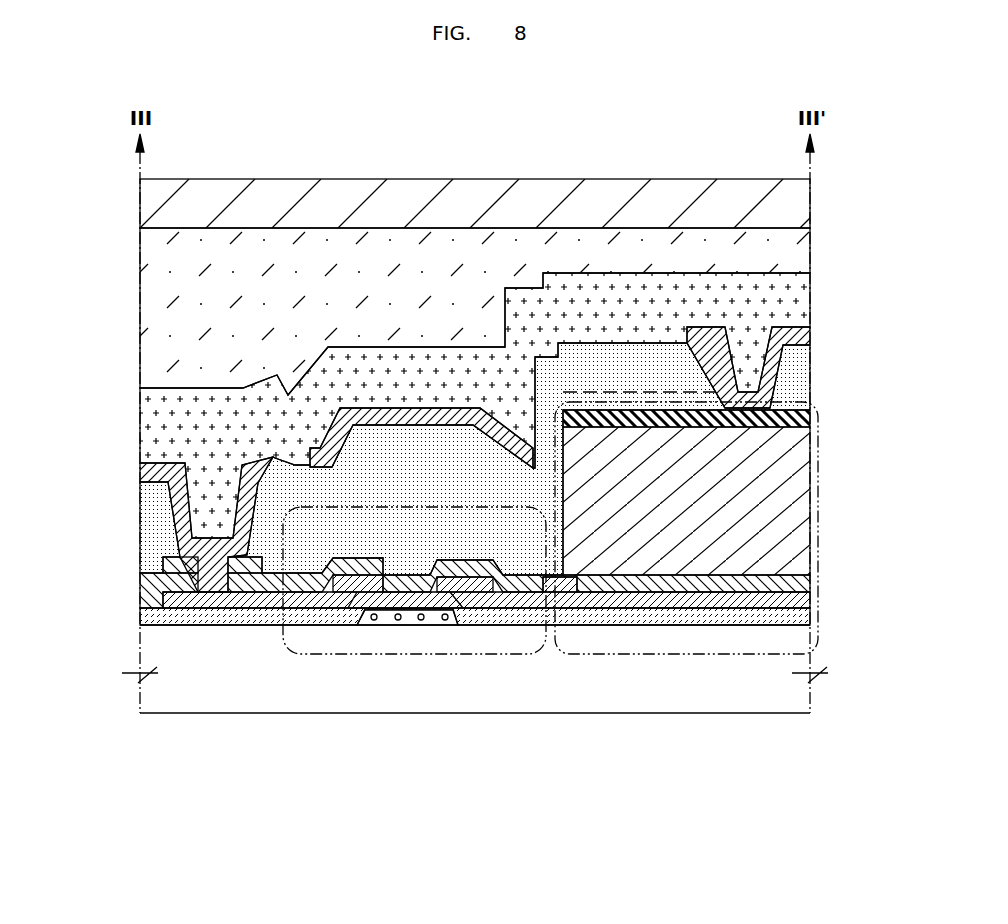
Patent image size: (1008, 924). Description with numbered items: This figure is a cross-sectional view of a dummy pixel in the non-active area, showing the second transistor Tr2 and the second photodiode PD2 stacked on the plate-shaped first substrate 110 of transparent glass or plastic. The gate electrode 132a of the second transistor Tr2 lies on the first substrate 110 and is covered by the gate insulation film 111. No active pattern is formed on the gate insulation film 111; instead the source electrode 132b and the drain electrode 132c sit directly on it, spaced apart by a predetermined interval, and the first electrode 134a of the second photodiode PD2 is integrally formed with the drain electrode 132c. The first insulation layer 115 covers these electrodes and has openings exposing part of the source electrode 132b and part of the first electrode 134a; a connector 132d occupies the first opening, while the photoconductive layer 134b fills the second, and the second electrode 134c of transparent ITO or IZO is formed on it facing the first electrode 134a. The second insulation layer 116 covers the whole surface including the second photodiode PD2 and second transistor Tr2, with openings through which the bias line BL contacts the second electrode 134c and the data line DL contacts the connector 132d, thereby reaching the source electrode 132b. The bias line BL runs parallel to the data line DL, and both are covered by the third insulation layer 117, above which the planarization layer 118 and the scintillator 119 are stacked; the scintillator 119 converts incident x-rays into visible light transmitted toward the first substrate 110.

The first substrate 110 is at (795, 660).
The gate insulation film 111 is at (140, 616).
The first insulation layer 115 is at (150, 587).
The second insulation layer 116 is at (150, 521).
The third insulation layer 117 is at (152, 422).
The planarization layer 118 is at (142, 321).
The scintillator 119 is at (142, 208).
The data line DL is at (140, 471).
The bias line BL is at (417, 413).
The gate electrode 132a is at (400, 625).
The source electrode 132b is at (263, 592).
The drain electrode 132c is at (545, 555).
The connector 132d is at (202, 592).
The first electrode 134a is at (810, 605).
The photoconductive layer 134b is at (812, 519).
The second electrode 134c is at (808, 418).
The second transistor Tr2 is at (338, 654).
The second photodiode PD2 is at (700, 654).